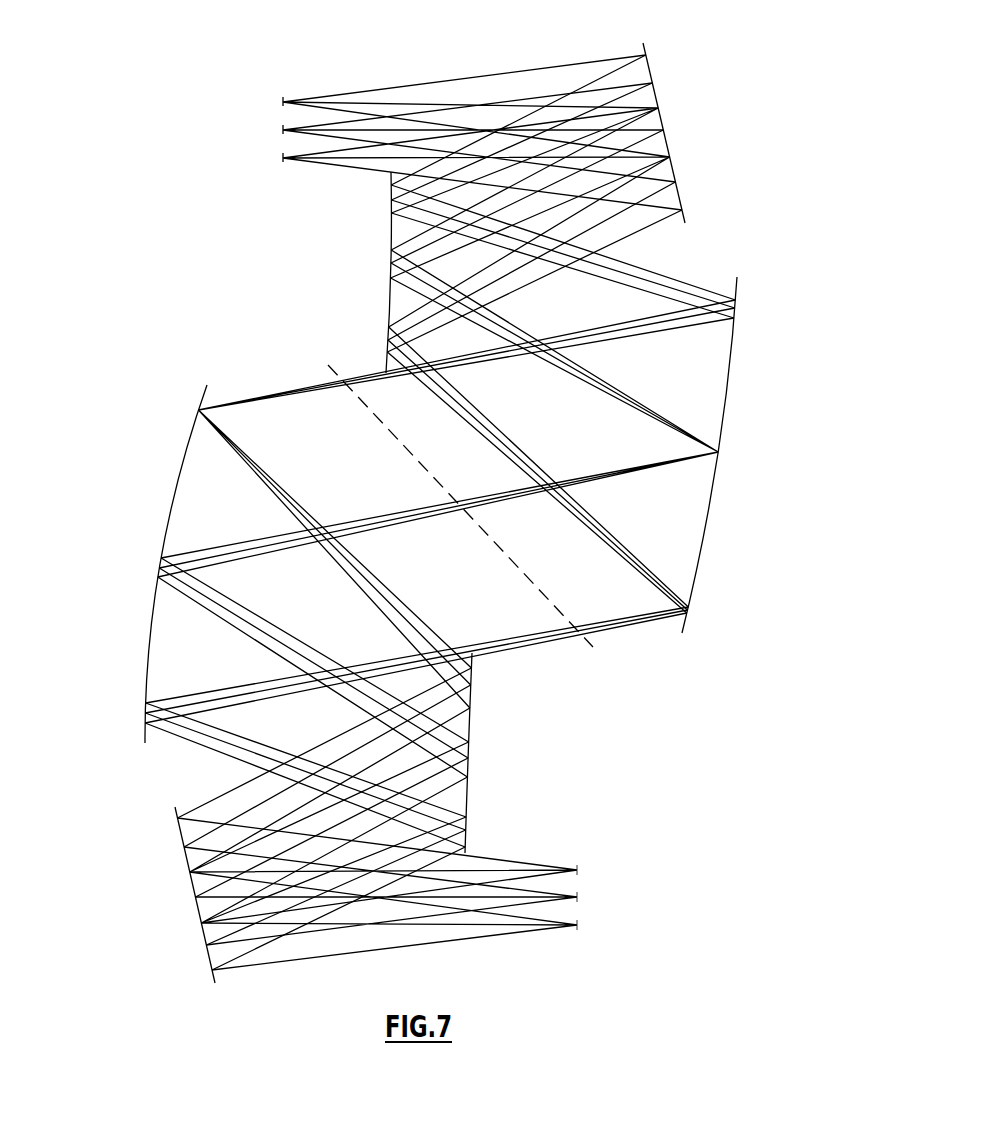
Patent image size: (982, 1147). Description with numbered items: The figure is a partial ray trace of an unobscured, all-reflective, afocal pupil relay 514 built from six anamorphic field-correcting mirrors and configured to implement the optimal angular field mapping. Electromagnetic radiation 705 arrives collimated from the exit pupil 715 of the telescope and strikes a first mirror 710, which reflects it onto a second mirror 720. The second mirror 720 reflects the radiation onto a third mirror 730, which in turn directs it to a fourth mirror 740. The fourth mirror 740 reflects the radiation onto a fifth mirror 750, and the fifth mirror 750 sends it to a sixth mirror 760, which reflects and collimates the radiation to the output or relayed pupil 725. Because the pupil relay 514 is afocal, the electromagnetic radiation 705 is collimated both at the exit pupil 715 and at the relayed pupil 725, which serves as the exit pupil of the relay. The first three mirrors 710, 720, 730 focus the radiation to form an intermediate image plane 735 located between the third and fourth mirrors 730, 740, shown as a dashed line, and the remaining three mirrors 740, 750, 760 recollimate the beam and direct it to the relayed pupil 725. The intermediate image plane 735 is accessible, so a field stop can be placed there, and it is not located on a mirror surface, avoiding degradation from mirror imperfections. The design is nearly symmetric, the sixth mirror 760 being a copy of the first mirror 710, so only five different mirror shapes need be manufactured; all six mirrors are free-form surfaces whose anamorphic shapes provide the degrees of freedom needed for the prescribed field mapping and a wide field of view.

The afocal pupil relay 514 is at (140, 133).
The electromagnetic radiation 705 is at (366, 78).
The exit pupil 715 is at (268, 127).
The first mirror 710 is at (697, 155).
The second mirror 720 is at (362, 288).
The third mirror 730 is at (735, 405).
The intermediate image plane 735 is at (592, 658).
The fourth mirror 740 is at (145, 500).
The fifth mirror 750 is at (470, 788).
The sixth mirror 760 is at (175, 890).
The relayed pupil 725 is at (590, 882).